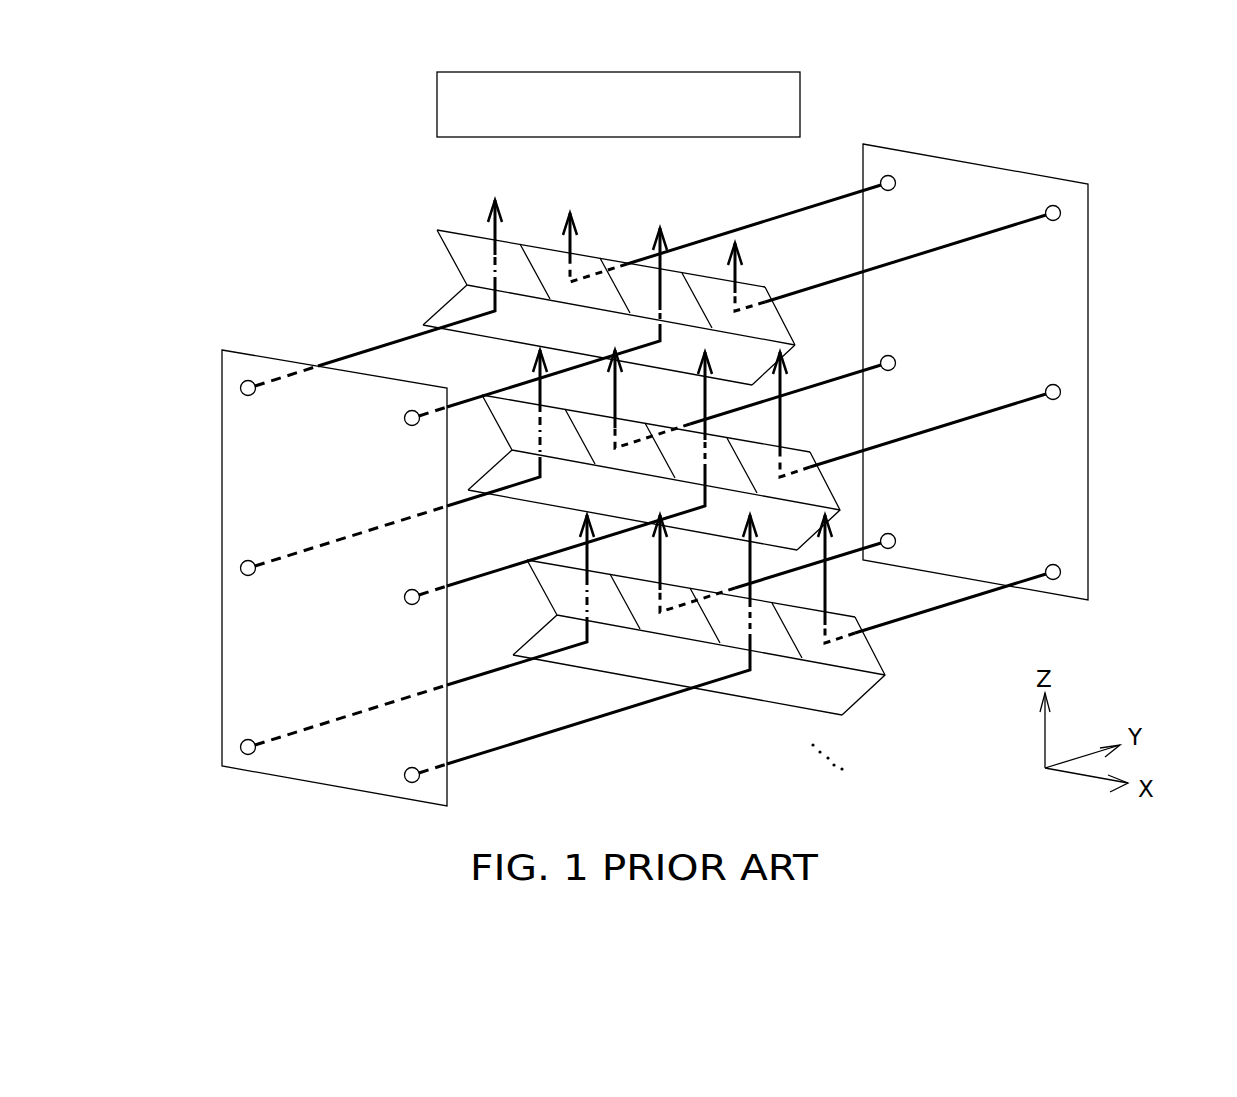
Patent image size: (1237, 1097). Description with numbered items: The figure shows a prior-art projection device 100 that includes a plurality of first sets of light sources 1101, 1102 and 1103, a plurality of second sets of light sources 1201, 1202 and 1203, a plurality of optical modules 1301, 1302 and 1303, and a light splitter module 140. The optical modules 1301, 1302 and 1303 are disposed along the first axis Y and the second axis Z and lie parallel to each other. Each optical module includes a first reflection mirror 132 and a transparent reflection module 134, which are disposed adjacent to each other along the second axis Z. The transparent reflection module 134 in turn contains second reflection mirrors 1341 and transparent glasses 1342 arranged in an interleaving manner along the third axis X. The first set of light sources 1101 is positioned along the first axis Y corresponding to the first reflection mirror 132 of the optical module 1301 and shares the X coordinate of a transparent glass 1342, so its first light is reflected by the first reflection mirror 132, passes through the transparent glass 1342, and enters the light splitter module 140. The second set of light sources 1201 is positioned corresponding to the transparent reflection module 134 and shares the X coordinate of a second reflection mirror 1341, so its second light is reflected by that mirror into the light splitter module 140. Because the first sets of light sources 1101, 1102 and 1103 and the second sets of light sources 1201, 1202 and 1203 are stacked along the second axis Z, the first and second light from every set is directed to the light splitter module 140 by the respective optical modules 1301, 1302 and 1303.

The projection device 100 is at (1098, 130).
The light splitter module 140 is at (437, 105).
The first set of light sources 1101 is at (240, 388).
The first set of light sources 1102 is at (240, 568).
The first set of light sources 1103 is at (240, 747).
The second set of light sources 1201 is at (897, 183).
The second set of light sources 1202 is at (897, 363).
The second set of light sources 1203 is at (897, 541).
The optical module 1301 is at (495, 280).
The optical module 1302 is at (548, 490).
The optical module 1303 is at (582, 655).
The first reflection mirror 132 is at (437, 312).
The transparent reflection module 134 is at (535, 260).
The second reflection mirror 1341 is at (552, 262).
The transparent glass 1342 is at (457, 256).